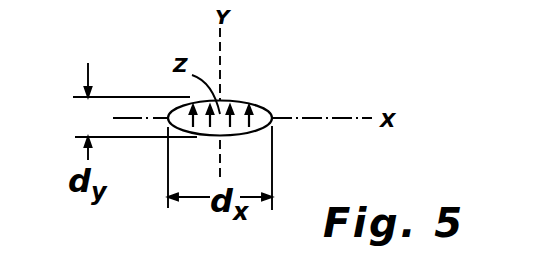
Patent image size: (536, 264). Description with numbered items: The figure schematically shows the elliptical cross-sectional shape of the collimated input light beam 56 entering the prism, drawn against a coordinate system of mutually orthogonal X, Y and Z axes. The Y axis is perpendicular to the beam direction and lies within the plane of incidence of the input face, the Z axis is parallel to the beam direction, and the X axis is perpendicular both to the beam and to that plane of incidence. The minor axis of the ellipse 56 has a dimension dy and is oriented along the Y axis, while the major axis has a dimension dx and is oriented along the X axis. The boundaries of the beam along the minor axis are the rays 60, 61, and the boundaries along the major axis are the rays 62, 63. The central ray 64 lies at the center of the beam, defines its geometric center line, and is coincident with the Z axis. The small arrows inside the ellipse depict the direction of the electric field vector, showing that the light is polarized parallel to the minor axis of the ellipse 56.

The collimated input light beam 56 is at (276, 104).
The ray 60 is at (220, 112).
The ray 61 is at (218, 136).
The ray 62 is at (168, 118).
The ray 63 is at (272, 119).
The central ray 64 is at (220, 110).